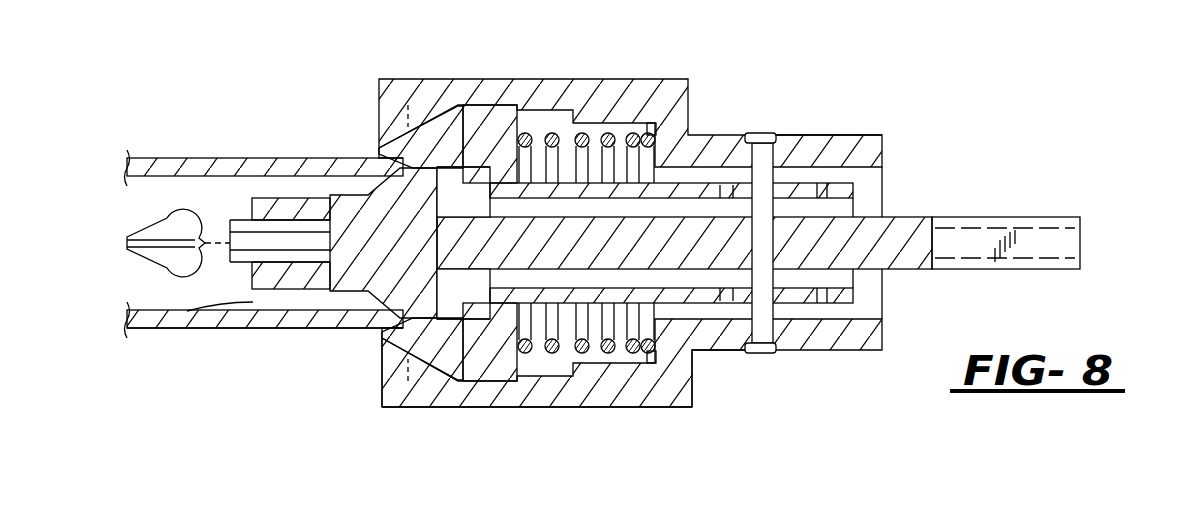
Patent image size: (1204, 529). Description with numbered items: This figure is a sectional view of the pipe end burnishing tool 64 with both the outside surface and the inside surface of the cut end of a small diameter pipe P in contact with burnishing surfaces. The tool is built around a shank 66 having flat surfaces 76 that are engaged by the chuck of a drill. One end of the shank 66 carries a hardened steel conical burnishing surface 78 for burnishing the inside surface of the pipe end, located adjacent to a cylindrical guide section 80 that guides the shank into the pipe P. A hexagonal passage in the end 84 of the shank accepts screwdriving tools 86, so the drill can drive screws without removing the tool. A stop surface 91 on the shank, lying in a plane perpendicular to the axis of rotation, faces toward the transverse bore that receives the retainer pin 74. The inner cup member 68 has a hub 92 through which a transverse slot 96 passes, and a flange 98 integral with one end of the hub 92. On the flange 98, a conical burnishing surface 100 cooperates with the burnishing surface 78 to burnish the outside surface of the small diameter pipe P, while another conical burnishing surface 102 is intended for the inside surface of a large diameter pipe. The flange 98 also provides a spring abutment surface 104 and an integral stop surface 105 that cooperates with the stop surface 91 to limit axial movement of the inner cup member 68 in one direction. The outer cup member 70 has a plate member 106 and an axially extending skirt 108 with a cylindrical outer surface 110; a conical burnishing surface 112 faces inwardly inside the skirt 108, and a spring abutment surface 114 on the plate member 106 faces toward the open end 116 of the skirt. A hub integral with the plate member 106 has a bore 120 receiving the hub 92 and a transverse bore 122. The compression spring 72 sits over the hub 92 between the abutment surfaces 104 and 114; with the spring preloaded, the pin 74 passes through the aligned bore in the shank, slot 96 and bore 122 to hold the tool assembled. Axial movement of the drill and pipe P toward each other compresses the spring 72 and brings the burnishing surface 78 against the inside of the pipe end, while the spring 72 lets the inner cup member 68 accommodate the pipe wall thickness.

The pipe P is at (178, 157).
The burnishing tool 64 is at (752, 82).
The shank 66 is at (1080, 245).
The inner cup member 68 is at (870, 300).
The outer cup member 70 is at (660, 79).
The compression spring 72 is at (545, 378).
The retainer pin 74 is at (753, 133).
The flat surfaces 76 is at (1045, 240).
The conical burnishing surface 78 is at (257, 302).
The cylindrical guide section 80 is at (185, 311).
The end of the shank 84 is at (252, 276).
The screwdriving tools 86 is at (167, 216).
The stop surface 91 is at (437, 190).
The hub 92 is at (843, 180).
The transverse slot 96 is at (795, 300).
The flange 98 is at (505, 408).
The conical burnishing surface 100 is at (382, 333).
The conical burnishing surface 102 is at (382, 367).
The spring abutment surface 104 is at (517, 120).
The stop surface 105 is at (488, 178).
The plate member 106 is at (695, 362).
The skirt 108 is at (420, 408).
The cylindrical outer surface 110 is at (672, 408).
The conical burnishing surface 112 is at (377, 107).
The spring abutment surface 114 is at (650, 133).
The open end 116 is at (382, 384).
The bore 120 is at (870, 315).
The transverse bore 122 is at (805, 137).